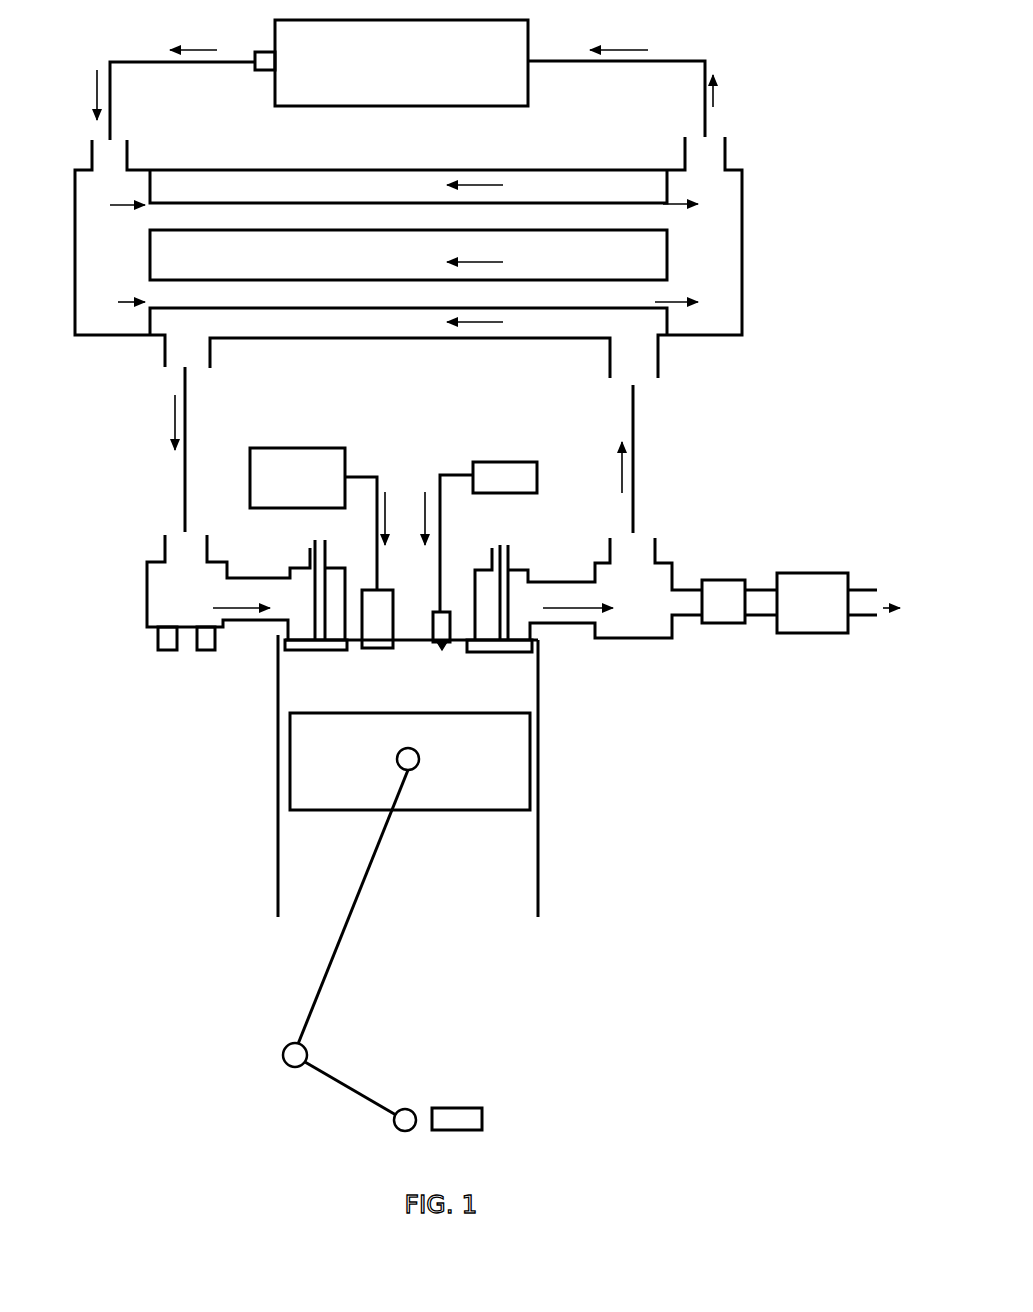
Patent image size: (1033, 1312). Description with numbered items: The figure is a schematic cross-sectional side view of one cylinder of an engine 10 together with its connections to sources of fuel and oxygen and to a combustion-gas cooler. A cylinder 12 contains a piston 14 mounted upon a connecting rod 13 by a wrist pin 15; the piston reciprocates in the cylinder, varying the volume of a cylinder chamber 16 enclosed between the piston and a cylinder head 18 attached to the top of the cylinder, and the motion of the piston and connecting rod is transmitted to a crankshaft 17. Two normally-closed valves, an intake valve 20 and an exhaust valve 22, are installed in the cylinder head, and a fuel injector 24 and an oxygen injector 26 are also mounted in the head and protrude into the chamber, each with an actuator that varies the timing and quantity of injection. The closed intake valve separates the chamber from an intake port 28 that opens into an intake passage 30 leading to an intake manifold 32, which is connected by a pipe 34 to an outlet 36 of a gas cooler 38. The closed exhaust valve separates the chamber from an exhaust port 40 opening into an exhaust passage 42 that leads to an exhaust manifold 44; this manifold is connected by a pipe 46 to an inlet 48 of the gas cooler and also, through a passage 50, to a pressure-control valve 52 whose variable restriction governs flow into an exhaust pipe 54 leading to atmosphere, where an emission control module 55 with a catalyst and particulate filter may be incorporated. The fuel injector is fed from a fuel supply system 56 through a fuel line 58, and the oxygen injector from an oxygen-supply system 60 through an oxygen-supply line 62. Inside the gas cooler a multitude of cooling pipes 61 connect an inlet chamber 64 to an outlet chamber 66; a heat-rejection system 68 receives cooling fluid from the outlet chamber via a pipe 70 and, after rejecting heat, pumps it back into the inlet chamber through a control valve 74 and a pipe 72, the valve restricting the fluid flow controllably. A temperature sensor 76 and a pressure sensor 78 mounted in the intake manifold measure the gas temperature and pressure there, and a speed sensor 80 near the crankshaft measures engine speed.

The engine 10 is at (578, 780).
The cylinder 12 is at (540, 797).
The connecting rod 13 is at (345, 933).
The piston 14 is at (448, 818).
The wrist pin 15 is at (422, 755).
The cylinder chamber 16 is at (527, 703).
The crankshaft 17 is at (345, 1083).
The cylinder head 18 is at (413, 645).
The intake valve 20 is at (322, 648).
The exhaust valve 22 is at (490, 645).
The fuel injector 24 is at (437, 645).
The oxygen injector 26 is at (385, 607).
The intake port 28 is at (293, 568).
The intake passage 30 is at (253, 627).
The intake manifold 32 is at (146, 566).
The pipe 34 is at (185, 495).
The outlet 36 is at (163, 357).
The gas cooler 38 is at (413, 338).
The exhaust port 40 is at (517, 568).
The exhaust passage 42 is at (555, 627).
The exhaust manifold 44 is at (673, 568).
The pipe 46 is at (633, 435).
The inlet 48 is at (660, 357).
The passage 50 is at (687, 608).
The pressure-control valve 52 is at (725, 588).
The exhaust pipe 54 is at (765, 608).
The emission control module 55 is at (832, 570).
The fuel supply system 56 is at (503, 472).
The fuel line 58 is at (442, 547).
The oxygen-supply system 60 is at (280, 453).
The cooling pipes 61 is at (255, 225).
The oxygen-supply line 62 is at (377, 492).
The inlet chamber 64 is at (110, 338).
The outlet chamber 66 is at (742, 300).
The heat-rejection system 68 is at (373, 106).
The pipe 70 is at (688, 70).
The pipe 72 is at (135, 70).
The control valve 74 is at (258, 50).
The temperature sensor 76 is at (160, 650).
The pressure sensor 78 is at (200, 650).
The speed sensor 80 is at (478, 1105).